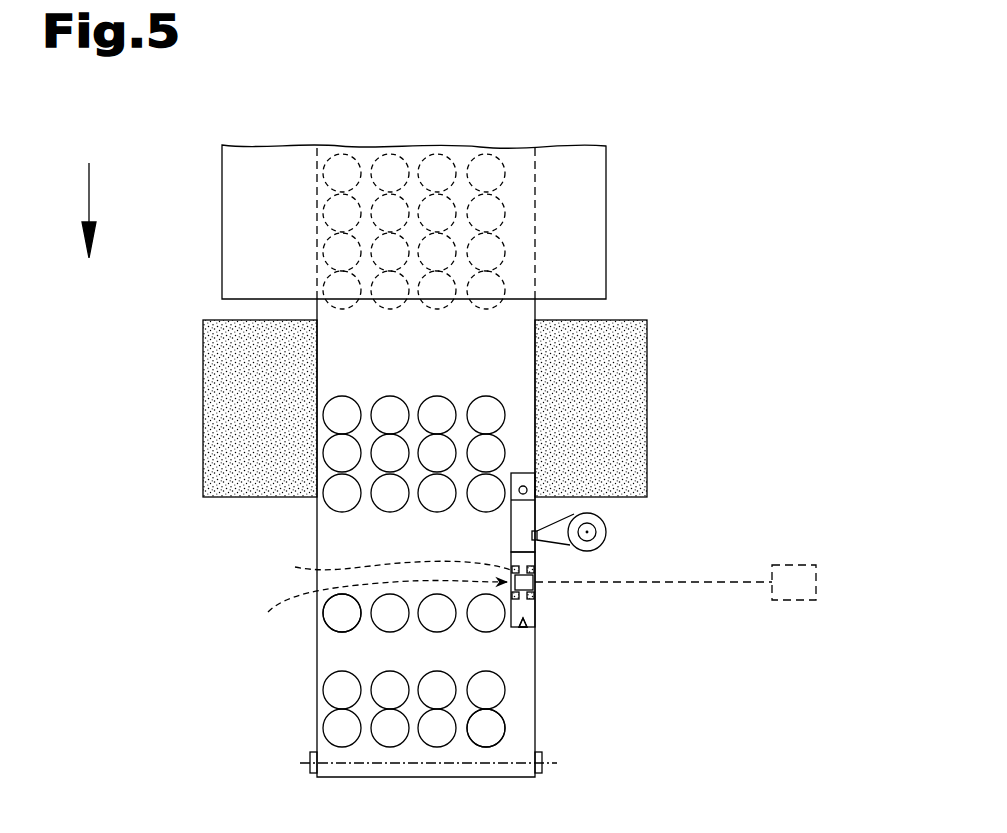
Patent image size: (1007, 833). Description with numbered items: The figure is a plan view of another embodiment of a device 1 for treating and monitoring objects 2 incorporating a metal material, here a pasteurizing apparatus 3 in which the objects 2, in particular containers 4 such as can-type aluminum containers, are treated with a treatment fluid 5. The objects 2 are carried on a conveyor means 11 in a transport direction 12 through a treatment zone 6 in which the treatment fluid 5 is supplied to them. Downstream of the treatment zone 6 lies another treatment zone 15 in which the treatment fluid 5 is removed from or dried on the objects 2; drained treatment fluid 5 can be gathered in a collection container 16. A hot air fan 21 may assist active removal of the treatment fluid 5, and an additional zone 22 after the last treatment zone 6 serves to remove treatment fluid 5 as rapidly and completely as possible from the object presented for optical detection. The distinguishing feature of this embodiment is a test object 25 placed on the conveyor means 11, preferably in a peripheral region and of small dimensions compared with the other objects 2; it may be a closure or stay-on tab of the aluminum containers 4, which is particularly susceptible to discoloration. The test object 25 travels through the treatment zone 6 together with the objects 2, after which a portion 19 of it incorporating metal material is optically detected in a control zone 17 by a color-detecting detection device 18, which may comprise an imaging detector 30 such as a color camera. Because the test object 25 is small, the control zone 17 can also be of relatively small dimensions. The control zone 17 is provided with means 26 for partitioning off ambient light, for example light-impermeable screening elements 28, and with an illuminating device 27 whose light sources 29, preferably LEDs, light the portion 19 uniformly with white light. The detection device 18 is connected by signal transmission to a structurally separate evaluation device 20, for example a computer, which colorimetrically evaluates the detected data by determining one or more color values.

The device 1 is at (708, 106).
The objects 2 is at (325, 622).
The pasteurizing apparatus 3 is at (120, 575).
The containers 4 is at (414, 670).
The treatment fluid 5 is at (216, 420).
The treatment zone 6 is at (622, 257).
The conveyor means 11 is at (527, 730).
The transport direction 12 is at (83, 194).
The other treatment zone 15 is at (310, 468).
The collection container 16 is at (647, 372).
The control zone 17 is at (542, 593).
The color-detecting detection device 18 is at (540, 612).
The portion 19 is at (534, 497).
The evaluation device 20 is at (800, 600).
The hot air fan 21 is at (618, 540).
The additional zone 22 is at (530, 473).
The test object 25 is at (528, 490).
The means for partitioning off ambient light 26 is at (532, 612).
The illuminating device 27 is at (380, 612).
The screening elements 28 is at (523, 622).
The light sources 29 is at (391, 565).
The imaging detector 30 is at (540, 580).